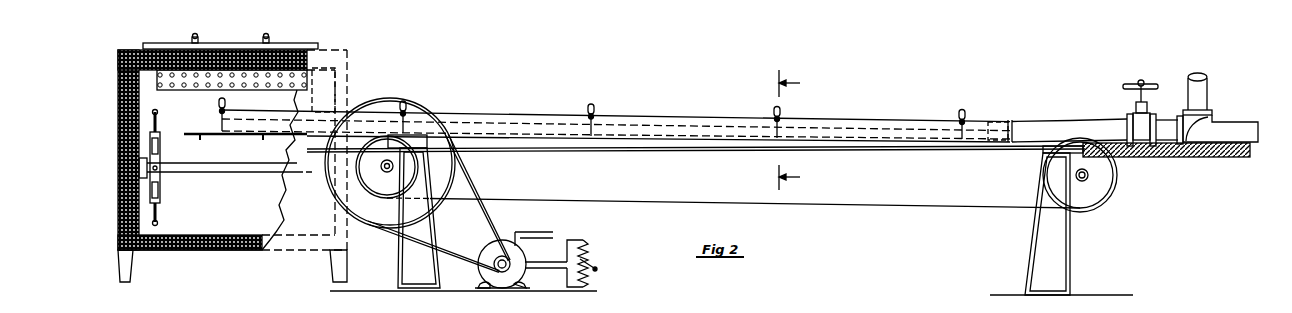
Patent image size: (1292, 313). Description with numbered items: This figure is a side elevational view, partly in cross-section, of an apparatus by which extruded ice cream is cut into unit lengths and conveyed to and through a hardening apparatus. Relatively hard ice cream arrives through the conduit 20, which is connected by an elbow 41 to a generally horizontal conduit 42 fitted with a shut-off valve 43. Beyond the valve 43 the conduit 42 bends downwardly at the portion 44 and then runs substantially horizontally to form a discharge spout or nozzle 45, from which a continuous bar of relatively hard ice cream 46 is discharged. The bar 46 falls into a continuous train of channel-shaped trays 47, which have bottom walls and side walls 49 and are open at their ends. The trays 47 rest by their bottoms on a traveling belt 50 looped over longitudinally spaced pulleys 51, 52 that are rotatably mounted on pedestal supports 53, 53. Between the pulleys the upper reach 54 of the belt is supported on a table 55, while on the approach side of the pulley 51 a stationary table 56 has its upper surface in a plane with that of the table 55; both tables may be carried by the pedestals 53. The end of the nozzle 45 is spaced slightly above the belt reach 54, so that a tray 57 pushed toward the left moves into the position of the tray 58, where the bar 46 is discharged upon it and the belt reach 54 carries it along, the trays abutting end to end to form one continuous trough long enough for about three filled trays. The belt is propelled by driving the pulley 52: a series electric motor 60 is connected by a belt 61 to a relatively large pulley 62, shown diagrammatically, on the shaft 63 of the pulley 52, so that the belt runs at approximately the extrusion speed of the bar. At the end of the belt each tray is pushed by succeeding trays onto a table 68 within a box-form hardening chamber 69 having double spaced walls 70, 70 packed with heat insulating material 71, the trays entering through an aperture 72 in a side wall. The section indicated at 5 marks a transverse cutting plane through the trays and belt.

The conduit 20 is at (1200, 92).
The elbow 41 is at (1203, 134).
The horizontal conduit 42 is at (1126, 117).
The shut-off valve 43 is at (1146, 102).
The downward bend 44 is at (1096, 120).
The discharge spout or nozzle 45 is at (1029, 128).
The bar of ice cream 46 is at (930, 133).
The channel-shaped trays 47 is at (228, 108).
The side walls 49 is at (720, 117).
The traveling belt 50 is at (946, 207).
The pulley 51 is at (1108, 184).
The pulley 52 is at (380, 194).
The pedestal supports 53 is at (399, 258).
The upper reach of the belt 54 is at (858, 150).
The table 55 is at (692, 148).
The stationary table 56 is at (1150, 157).
The tray 57 is at (1258, 131).
The tray 58 is at (986, 120).
The series electric motor 60 is at (505, 282).
The belt 61 is at (485, 222).
The large pulley 62 is at (438, 207).
The shaft 63 is at (390, 172).
The table 68 is at (186, 135).
The hardening chamber 69 is at (338, 66).
The double spaced walls 70 is at (178, 236).
The heat insulating material 71 is at (213, 250).
The aperture 72 is at (346, 84).
The section line 5- 5 is at (794, 130).